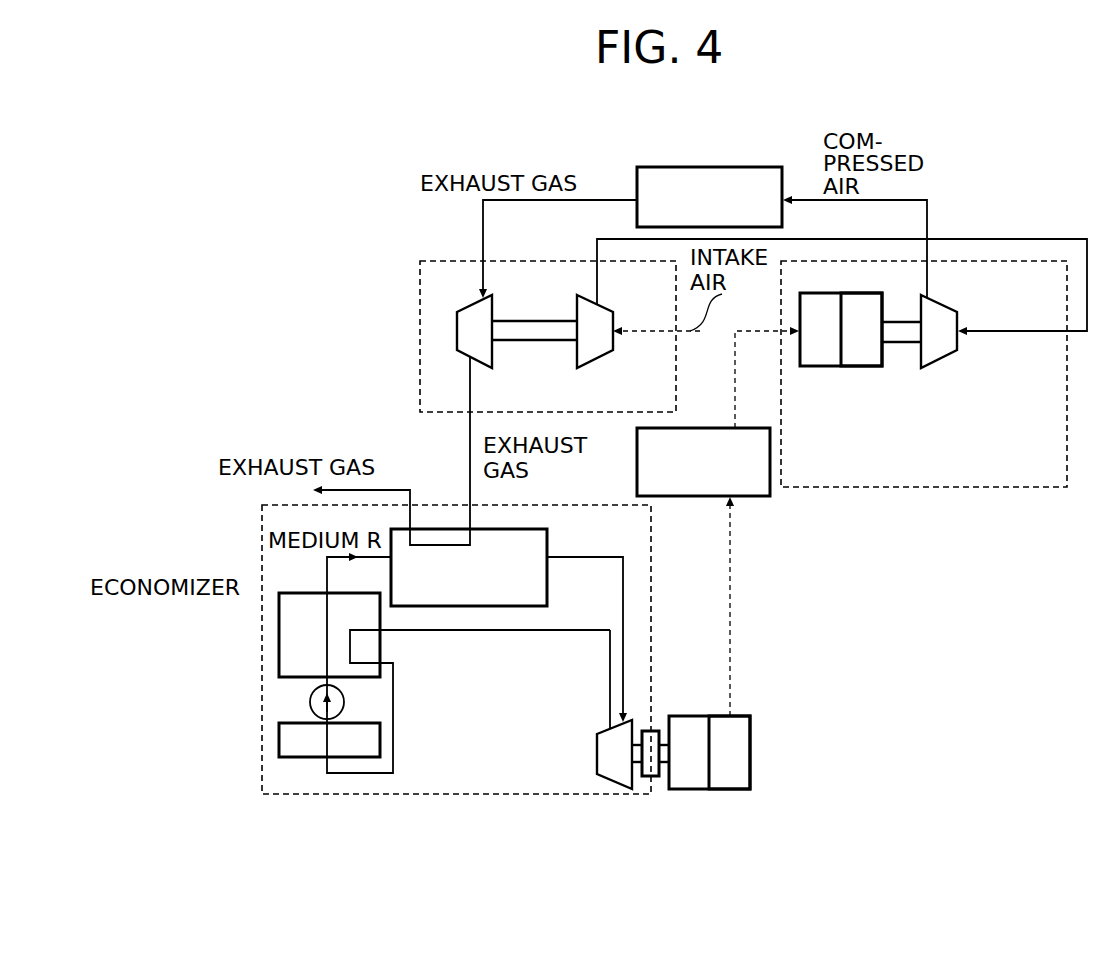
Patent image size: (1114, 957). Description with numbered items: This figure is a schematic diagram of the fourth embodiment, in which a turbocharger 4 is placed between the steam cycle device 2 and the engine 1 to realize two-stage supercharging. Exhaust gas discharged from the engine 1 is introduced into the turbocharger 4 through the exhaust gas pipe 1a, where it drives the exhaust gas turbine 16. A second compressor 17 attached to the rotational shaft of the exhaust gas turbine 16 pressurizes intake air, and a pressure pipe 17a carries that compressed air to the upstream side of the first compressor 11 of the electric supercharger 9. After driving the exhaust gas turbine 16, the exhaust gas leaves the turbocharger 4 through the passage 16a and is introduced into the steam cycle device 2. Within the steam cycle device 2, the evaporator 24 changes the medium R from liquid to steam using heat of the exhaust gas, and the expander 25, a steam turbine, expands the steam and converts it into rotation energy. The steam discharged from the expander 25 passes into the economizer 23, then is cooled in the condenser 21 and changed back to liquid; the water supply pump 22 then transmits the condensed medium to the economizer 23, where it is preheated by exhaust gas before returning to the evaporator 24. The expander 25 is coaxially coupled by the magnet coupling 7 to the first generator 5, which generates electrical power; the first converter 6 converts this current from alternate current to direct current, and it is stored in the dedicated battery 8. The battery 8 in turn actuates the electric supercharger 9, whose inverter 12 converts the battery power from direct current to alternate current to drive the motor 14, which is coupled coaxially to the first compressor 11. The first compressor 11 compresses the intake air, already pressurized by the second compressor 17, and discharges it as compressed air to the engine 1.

The engine 1 is at (743, 167).
The exhaust gas pipe 1a is at (602, 200).
The steam cycle device 2 is at (338, 805).
The turbocharger 4 is at (440, 257).
The first generator 5 is at (688, 778).
The first converter 6 is at (737, 727).
The magnet coupling 7 is at (652, 778).
The dedicated battery 8 is at (748, 497).
The electric supercharger 9 is at (852, 494).
The first compressor 11 is at (944, 358).
The inverter 12 is at (820, 358).
The motor 14 is at (856, 358).
The exhaust gas turbine 16 is at (453, 332).
The exhaust gas passage 16a is at (470, 453).
The second compressor 17 is at (577, 354).
The pressure pipe 17a is at (982, 239).
The condenser 21 is at (278, 742).
The water supply pump 22 is at (310, 704).
The economizer 23 is at (278, 632).
The evaporator 24 is at (548, 548).
The expander 25 is at (597, 757).